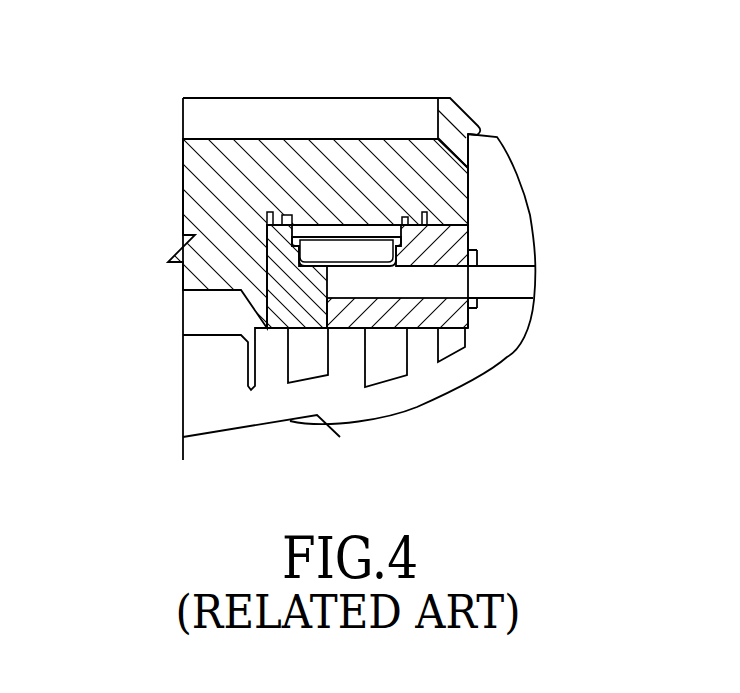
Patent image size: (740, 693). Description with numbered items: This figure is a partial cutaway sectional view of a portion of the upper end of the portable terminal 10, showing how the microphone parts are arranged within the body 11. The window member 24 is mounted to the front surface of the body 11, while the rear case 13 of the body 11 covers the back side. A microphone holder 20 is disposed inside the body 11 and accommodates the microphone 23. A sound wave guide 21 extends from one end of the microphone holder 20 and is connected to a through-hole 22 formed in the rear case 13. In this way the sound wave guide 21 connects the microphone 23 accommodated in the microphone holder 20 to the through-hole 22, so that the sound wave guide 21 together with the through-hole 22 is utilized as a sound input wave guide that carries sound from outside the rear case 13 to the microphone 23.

The portable terminal 10 is at (100, 182).
The body 11 is at (460, 115).
The rear case 13 is at (497, 355).
The microphone holder 20 is at (350, 232).
The sound wave guide 21 is at (413, 287).
The through-hole 22 is at (510, 282).
The microphone 23 is at (313, 252).
The window member 24 is at (235, 115).